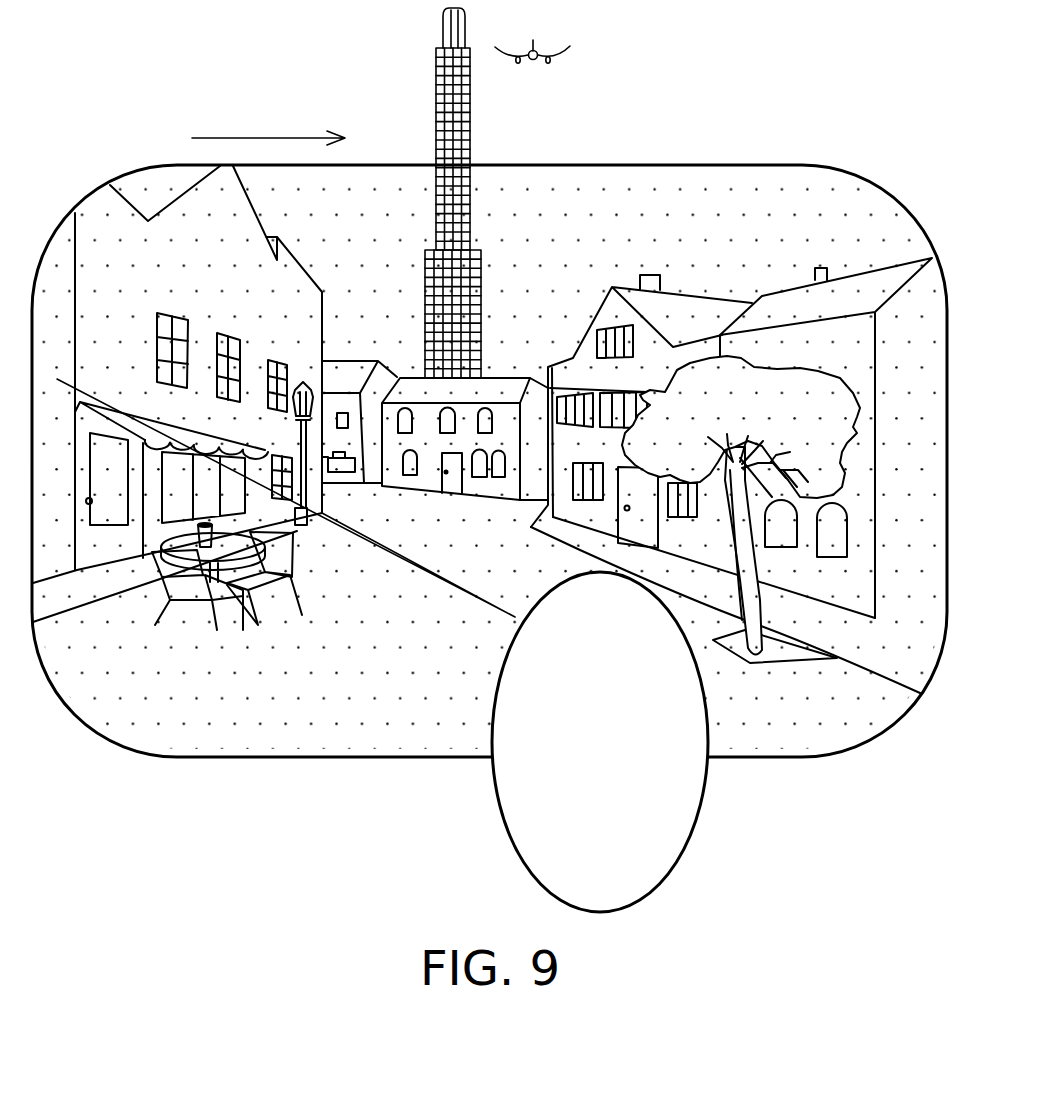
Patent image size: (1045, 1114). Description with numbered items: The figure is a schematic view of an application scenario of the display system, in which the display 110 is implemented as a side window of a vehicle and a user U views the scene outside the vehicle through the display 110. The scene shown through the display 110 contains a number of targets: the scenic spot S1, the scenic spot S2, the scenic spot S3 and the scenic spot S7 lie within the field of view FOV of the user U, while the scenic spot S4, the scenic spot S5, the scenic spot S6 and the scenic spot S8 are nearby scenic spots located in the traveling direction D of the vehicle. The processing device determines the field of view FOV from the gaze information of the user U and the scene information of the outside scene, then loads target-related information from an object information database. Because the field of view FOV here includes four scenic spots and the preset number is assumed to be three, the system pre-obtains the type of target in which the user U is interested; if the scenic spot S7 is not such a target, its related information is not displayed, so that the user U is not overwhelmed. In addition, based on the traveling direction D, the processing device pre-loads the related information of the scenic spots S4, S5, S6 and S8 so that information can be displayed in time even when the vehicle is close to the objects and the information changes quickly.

The display 110 is at (717, 165).
The traveling direction D is at (268, 122).
The scenic spot S1 is at (419, 476).
The scenic spot S2 is at (527, 618).
The scenic spot S3 is at (177, 394).
The scenic spot S4 is at (638, 507).
The scenic spot S5 is at (806, 515).
The scenic spot S6 is at (826, 438).
The scenic spot S7 is at (359, 407).
The scenic spot S8 is at (703, 446).
The field of view FOV is at (495, 562).
The user U is at (697, 817).